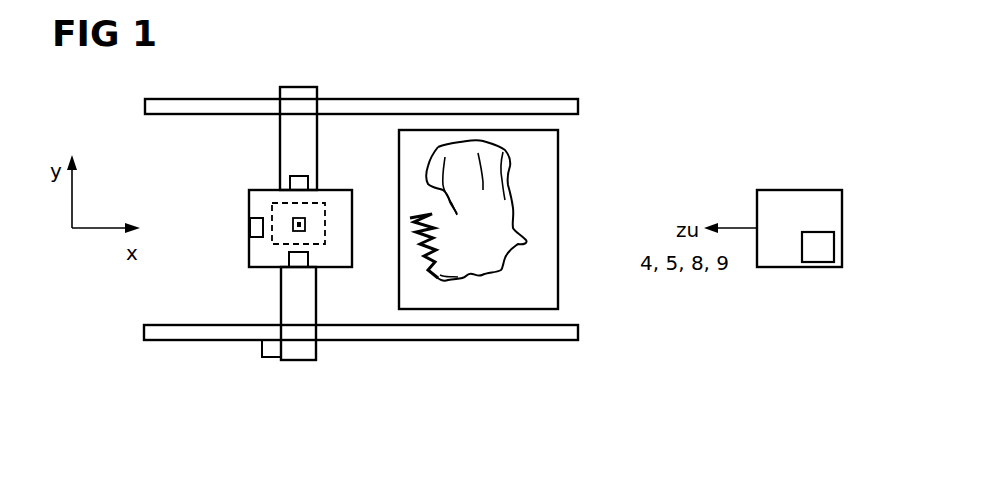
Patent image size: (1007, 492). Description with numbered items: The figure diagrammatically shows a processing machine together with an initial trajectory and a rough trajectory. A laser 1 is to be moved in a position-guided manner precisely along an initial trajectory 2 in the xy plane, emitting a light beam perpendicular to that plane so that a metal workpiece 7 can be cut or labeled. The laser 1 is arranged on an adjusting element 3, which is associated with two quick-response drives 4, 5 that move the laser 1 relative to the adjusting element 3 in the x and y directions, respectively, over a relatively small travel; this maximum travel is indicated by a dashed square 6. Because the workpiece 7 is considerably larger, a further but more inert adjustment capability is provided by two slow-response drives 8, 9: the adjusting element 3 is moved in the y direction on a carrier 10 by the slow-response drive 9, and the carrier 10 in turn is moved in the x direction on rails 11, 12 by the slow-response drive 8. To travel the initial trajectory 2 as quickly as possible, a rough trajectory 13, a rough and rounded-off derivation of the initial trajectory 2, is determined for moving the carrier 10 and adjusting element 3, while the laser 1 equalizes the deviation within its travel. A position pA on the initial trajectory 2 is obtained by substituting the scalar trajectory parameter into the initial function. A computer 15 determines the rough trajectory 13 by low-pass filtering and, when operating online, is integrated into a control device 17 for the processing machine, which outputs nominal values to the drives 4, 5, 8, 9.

The laser 1 is at (305, 226).
The initial trajectory 2 is at (456, 283).
The adjusting element 3 is at (334, 268).
The quick-response drive 4 is at (250, 229).
The quick-response drive 5 is at (300, 270).
The dashed square 6 is at (326, 237).
The workpiece 7 is at (558, 284).
The slow-response drive 8 is at (270, 360).
The slow-response drive 9 is at (298, 176).
The carrier 10 is at (298, 97).
The rail 11 is at (170, 331).
The rail 12 is at (179, 108).
The rough trajectory 13 is at (520, 232).
The computer 15 is at (819, 265).
The control device 17 is at (801, 190).
The position on the initial trajectory pA is at (507, 150).